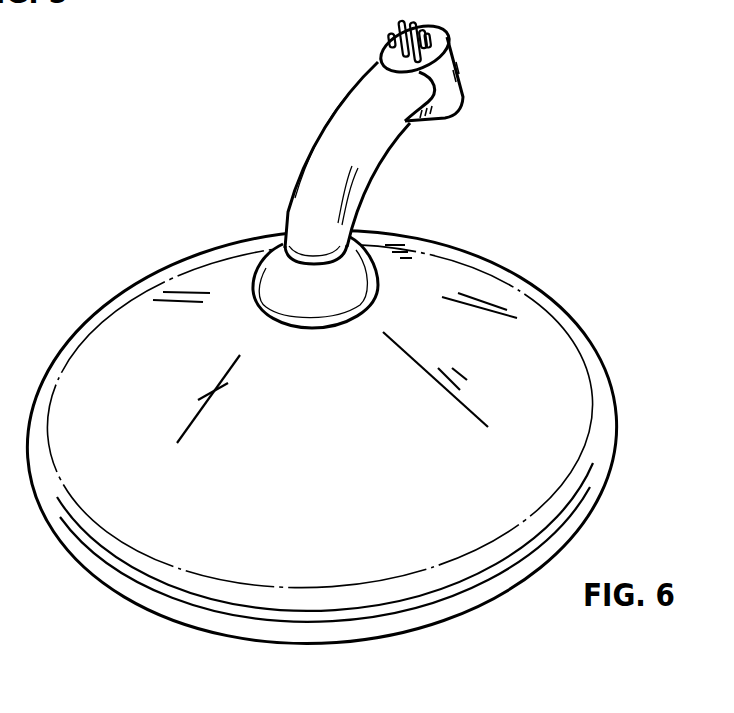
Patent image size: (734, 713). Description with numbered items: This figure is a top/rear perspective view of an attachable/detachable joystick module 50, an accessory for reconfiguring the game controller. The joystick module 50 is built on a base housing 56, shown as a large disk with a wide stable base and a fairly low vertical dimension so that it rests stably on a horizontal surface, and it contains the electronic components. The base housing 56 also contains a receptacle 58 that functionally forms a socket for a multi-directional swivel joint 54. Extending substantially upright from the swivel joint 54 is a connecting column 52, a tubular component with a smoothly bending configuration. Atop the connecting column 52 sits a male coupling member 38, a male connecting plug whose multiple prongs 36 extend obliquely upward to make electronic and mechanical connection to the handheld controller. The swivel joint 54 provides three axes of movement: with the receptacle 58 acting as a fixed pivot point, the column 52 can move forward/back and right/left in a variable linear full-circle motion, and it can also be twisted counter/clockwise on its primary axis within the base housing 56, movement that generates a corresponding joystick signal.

The prongs 36 is at (412, 20).
The male coupling member 38 is at (383, 55).
The joystick module 50 is at (583, 272).
The connecting column 52 is at (383, 132).
The multi-directional swivel joint 54 is at (268, 267).
The base housing 56 is at (185, 282).
The receptacle 58 is at (280, 239).